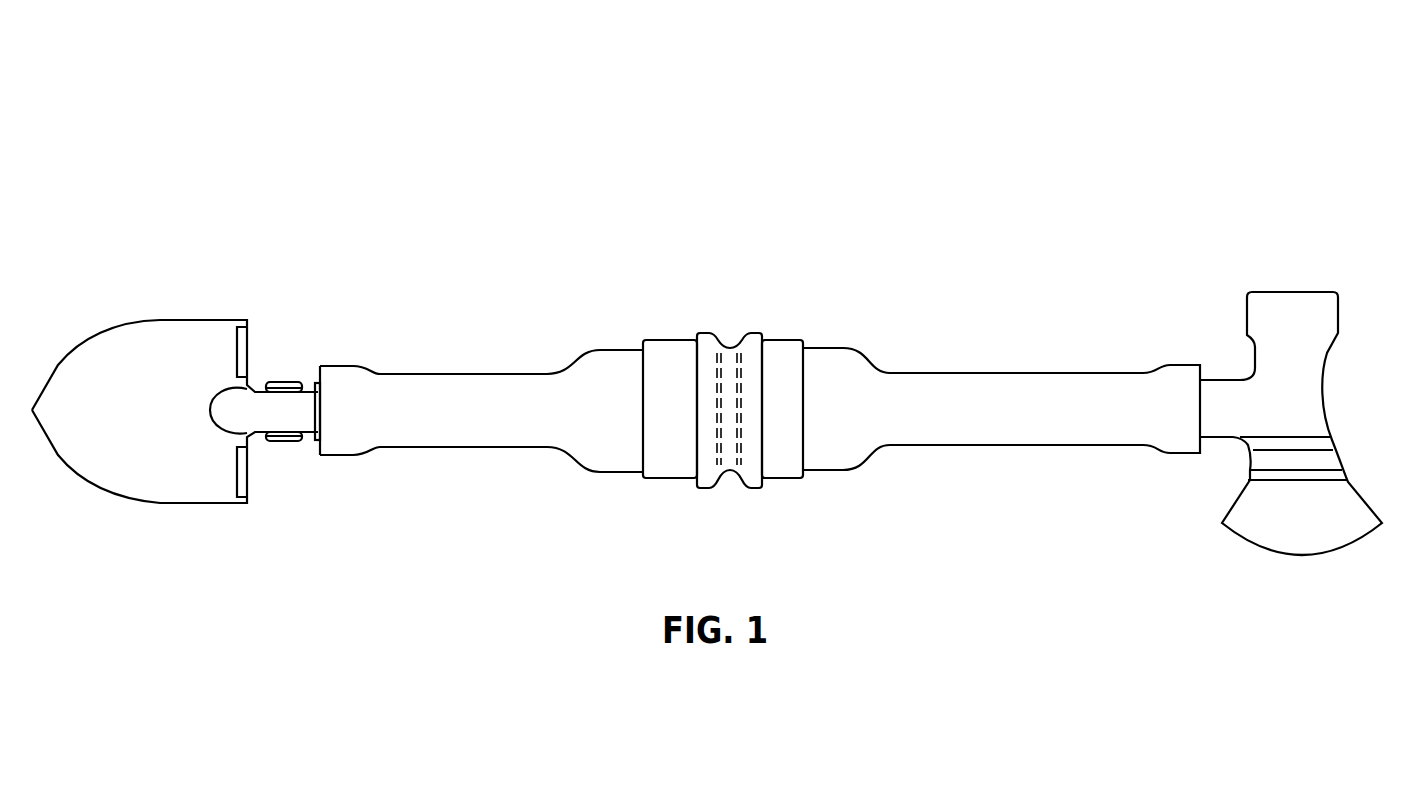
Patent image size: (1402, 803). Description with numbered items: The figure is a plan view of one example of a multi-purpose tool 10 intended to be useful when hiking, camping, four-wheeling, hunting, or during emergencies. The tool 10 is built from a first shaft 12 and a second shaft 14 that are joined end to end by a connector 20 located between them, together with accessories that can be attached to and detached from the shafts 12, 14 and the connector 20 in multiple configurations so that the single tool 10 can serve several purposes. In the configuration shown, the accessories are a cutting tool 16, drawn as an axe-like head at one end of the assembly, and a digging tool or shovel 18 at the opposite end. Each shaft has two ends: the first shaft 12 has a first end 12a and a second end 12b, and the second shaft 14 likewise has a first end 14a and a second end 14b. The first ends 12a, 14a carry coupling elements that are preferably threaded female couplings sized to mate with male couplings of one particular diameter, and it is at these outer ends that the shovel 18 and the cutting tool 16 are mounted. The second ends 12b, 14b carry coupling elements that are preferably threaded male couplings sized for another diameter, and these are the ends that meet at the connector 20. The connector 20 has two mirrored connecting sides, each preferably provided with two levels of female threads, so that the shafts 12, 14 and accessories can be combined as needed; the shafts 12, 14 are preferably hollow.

The multi-purpose tool 10 is at (208, 122).
The first shaft 12 is at (480, 385).
The first end of first shaft 12a is at (332, 375).
The second end of first shaft 12b is at (613, 353).
The second shaft 14 is at (1032, 375).
The first end of second shaft 14a is at (1182, 365).
The second end of second shaft 14b is at (843, 357).
The cutting tool 16 is at (1250, 532).
The shovel 18 is at (135, 337).
The connector 20 is at (726, 293).